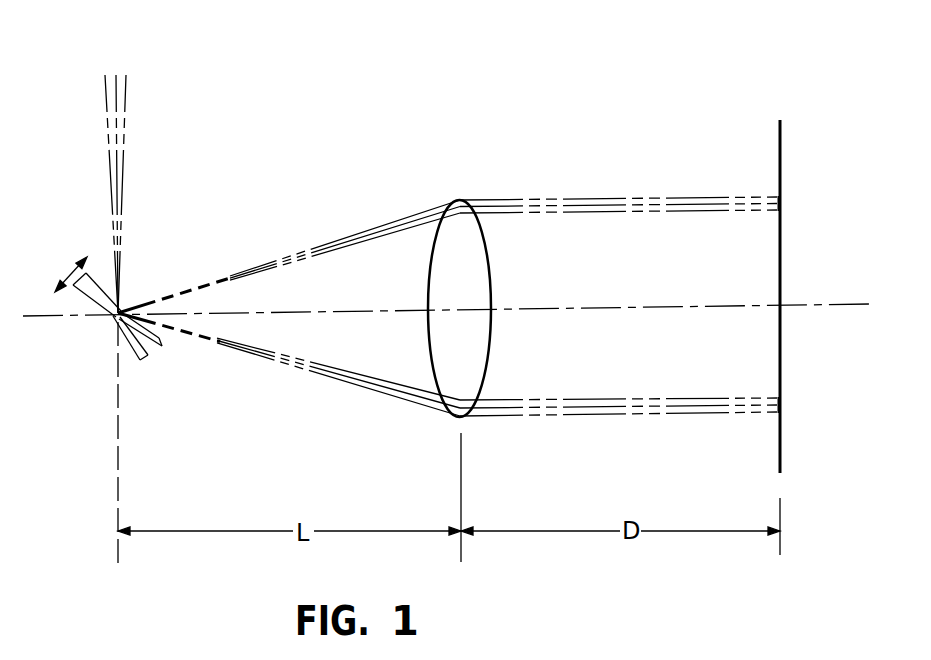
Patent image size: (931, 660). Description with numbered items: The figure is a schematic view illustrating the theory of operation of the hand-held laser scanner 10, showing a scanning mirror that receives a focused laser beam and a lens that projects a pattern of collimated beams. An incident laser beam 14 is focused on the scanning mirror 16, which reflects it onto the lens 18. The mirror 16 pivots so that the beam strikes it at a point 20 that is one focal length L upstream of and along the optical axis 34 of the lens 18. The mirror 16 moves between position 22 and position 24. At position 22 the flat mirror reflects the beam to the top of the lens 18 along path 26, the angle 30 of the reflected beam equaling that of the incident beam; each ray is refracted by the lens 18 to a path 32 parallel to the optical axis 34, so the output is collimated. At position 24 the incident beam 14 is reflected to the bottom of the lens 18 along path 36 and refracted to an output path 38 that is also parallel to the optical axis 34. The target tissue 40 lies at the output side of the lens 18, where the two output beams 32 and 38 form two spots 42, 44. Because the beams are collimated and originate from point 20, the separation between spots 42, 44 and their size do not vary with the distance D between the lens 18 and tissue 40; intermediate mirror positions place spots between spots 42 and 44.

The laser scanner 10 is at (500, 127).
The incident laser beam 14 is at (140, 111).
The scanning mirror 16 is at (106, 314).
The lens 18 is at (490, 338).
The point 20 is at (124, 309).
The position 22 is at (72, 170).
The position 24 is at (146, 362).
The path 26 is at (348, 236).
The angle of the reflected beam 30 is at (273, 293).
The path 32 is at (626, 184).
The optical axis 34 is at (617, 306).
The path 36 is at (368, 398).
The output path 38 is at (629, 427).
The target tissue 40 is at (782, 357).
The spot 42 is at (781, 200).
The spot 44 is at (782, 403).